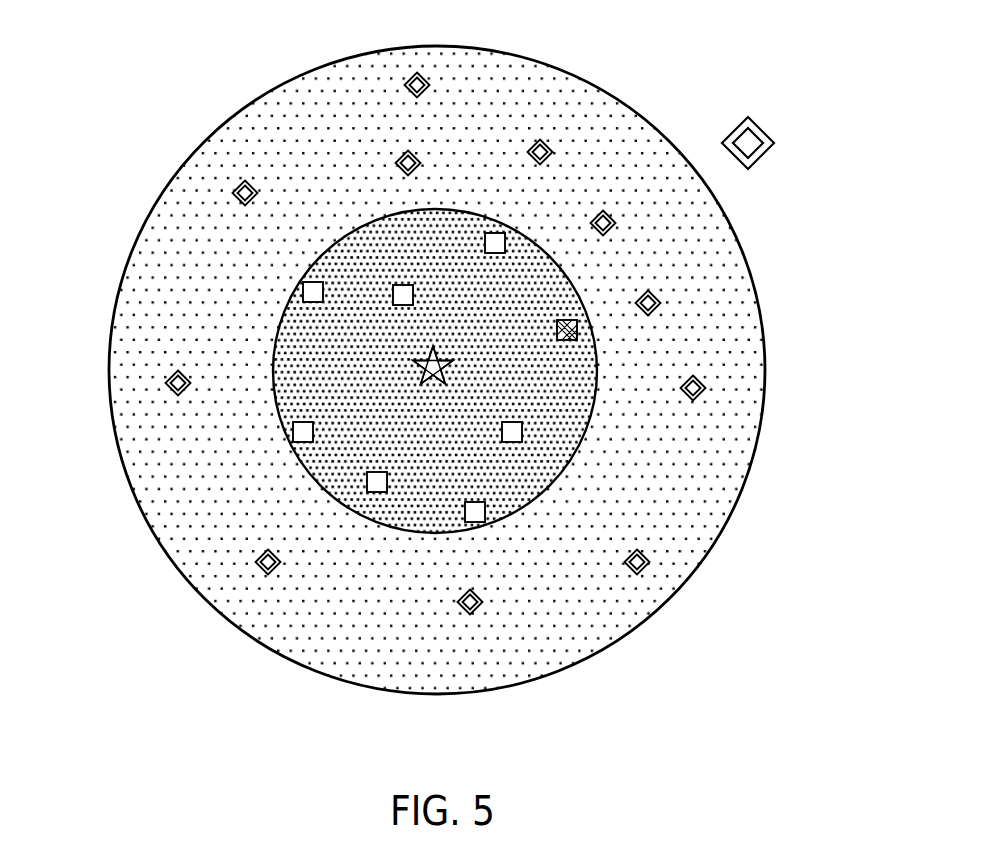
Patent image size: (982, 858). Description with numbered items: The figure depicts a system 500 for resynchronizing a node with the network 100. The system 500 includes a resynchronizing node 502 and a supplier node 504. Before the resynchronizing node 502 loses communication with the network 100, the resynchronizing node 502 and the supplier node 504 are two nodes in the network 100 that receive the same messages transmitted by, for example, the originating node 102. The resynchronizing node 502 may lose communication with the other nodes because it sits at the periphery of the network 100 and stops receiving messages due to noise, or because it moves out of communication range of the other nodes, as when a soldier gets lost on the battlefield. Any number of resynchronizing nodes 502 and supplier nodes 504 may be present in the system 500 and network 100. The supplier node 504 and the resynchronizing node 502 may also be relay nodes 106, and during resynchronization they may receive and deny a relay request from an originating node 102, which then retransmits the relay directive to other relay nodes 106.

The network 100 is at (112, 160).
The originating node 102 is at (428, 374).
The relay node 106 is at (578, 333).
The system 500 is at (746, 230).
The resynchronizing node 502 is at (764, 130).
The supplier node 504 is at (545, 141).